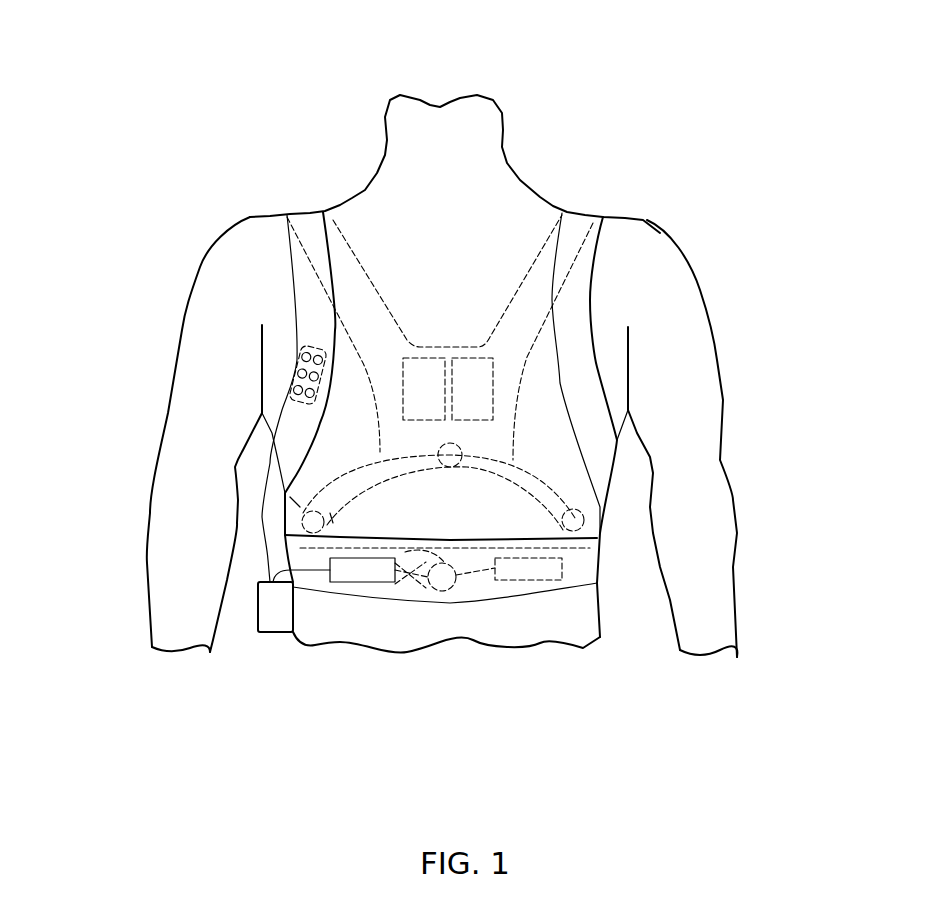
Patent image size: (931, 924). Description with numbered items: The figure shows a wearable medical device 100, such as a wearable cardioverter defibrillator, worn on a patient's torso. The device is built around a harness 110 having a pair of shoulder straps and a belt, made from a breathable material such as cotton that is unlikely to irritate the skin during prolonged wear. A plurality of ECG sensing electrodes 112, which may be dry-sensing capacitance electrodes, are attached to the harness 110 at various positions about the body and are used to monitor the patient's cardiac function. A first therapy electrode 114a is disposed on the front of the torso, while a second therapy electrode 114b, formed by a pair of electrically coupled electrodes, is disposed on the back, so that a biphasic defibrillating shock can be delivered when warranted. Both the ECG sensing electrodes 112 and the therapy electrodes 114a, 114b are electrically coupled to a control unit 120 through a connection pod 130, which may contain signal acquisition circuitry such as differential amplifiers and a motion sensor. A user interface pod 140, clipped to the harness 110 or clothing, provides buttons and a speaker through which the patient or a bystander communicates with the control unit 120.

The wearable medical device 100 is at (232, 114).
The harness 110 is at (578, 215).
The ECG sensing electrodes 112 is at (303, 512).
The first therapy electrode 114a is at (523, 580).
The second therapy electrode 114b is at (403, 368).
The control unit 120 is at (258, 588).
The connection pod 130 is at (353, 583).
The user interface pod 140 is at (300, 380).